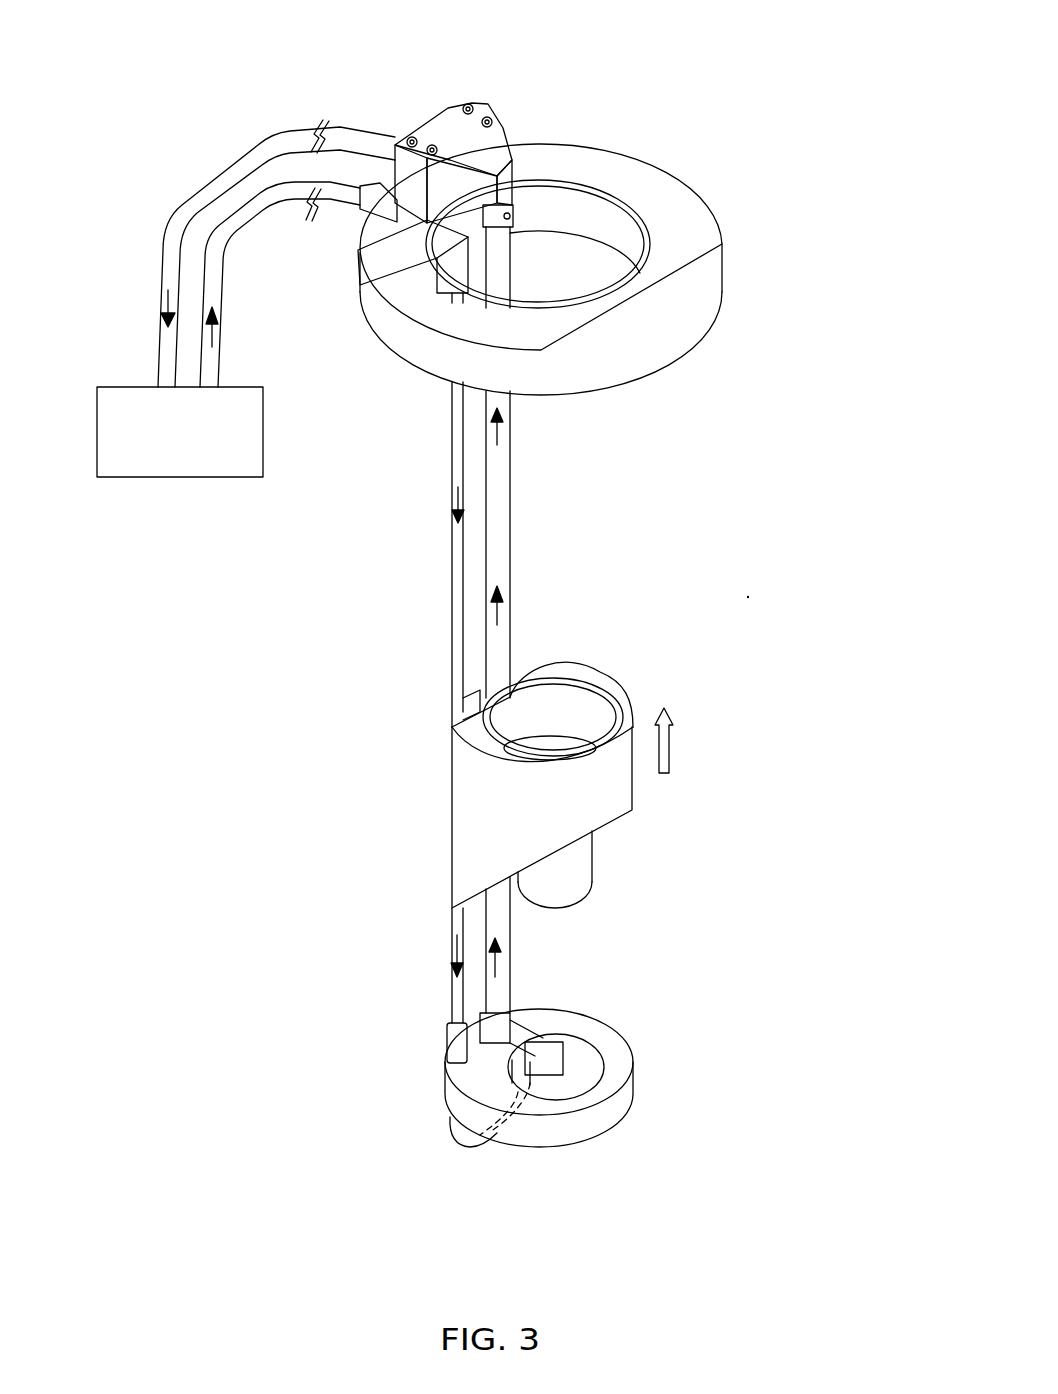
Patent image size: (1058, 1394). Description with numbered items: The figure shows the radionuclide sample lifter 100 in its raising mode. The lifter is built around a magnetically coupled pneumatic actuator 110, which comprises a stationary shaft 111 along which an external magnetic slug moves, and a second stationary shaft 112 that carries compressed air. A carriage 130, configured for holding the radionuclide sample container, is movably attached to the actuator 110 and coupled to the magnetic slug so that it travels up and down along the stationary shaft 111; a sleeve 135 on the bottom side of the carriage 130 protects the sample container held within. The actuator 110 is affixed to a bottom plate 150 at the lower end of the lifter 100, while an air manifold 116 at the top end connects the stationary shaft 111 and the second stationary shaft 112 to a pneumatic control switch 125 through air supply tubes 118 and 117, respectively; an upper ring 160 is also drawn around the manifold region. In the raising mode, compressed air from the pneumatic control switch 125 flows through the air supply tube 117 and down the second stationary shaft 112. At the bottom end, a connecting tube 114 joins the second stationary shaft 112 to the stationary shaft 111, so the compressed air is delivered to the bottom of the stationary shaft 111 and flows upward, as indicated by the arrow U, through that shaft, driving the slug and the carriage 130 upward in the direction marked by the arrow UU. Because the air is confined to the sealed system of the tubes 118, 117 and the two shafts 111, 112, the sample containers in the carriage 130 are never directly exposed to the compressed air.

The radionuclide sample lifter 100 is at (512, 37).
The magnetically coupled pneumatic actuator 110 is at (518, 625).
The stationary shaft 111 is at (500, 538).
The second stationary shaft 112 is at (452, 619).
The connecting tube 114 is at (482, 1147).
The air manifold 116 is at (532, 152).
The air supply tube 117 is at (226, 278).
The air supply tube 118 is at (194, 178).
The pneumatic control switch 125 is at (208, 438).
The carriage 130 is at (571, 767).
The sleeve 135 is at (578, 873).
The bottom plate 150 is at (607, 1042).
The upper ring 160 is at (662, 187).
The arrow U is at (500, 612).
The upward motion direction UU is at (673, 750).